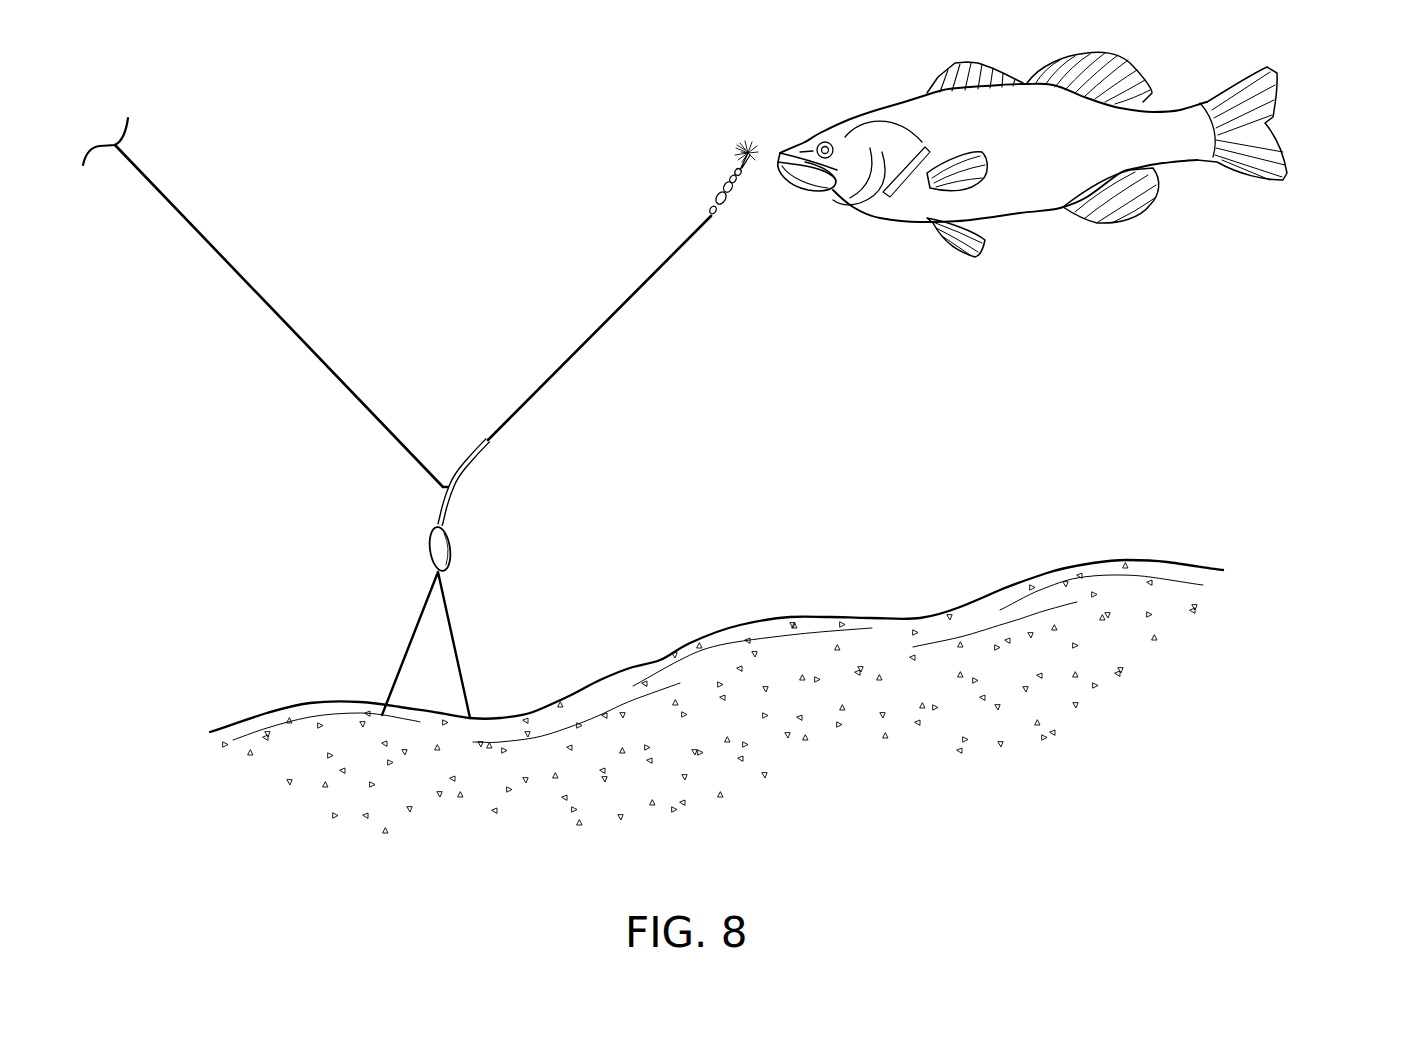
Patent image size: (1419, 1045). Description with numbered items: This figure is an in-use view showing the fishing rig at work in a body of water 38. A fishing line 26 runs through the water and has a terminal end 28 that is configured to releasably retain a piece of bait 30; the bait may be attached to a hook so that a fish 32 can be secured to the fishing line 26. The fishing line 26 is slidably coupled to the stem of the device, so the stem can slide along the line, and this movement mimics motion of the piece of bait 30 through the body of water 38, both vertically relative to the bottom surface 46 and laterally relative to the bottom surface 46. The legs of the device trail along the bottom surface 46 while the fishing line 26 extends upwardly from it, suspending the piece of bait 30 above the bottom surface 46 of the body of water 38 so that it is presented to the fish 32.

The fishing line 26 is at (638, 290).
The terminal end 28 is at (710, 217).
The piece of bait 30 is at (750, 147).
The fish 32 is at (1280, 108).
The body of water 38 is at (1262, 330).
The bottom surface 46 is at (1167, 562).